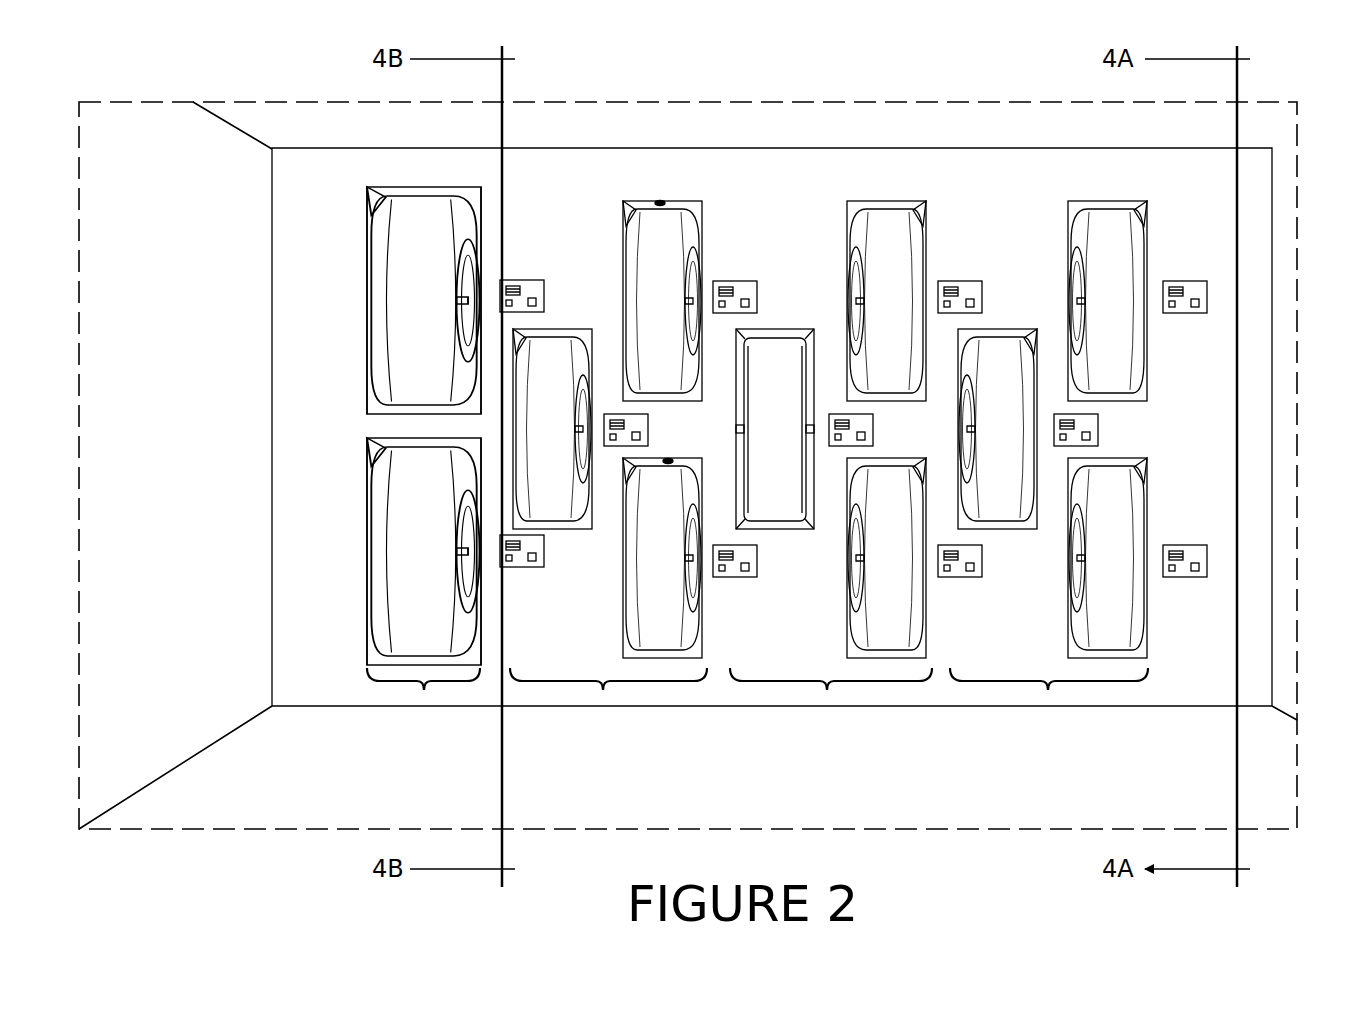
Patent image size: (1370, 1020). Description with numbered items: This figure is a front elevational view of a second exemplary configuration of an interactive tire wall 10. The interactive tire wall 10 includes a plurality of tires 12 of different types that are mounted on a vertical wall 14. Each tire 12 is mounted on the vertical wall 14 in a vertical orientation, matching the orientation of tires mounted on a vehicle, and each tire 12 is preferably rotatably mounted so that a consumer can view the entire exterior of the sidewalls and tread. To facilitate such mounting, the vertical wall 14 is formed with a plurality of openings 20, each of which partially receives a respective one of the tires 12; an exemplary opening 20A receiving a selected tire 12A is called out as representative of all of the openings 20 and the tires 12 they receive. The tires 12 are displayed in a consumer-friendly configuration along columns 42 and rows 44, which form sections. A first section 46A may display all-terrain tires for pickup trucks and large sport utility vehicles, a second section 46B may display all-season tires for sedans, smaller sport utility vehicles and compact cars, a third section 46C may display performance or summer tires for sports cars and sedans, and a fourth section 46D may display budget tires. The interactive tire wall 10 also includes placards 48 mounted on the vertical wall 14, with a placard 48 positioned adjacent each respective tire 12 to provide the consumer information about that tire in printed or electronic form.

The interactive tire wall 10 is at (877, 79).
The tire 12 is at (684, 205).
The selected tire 12A is at (652, 456).
The vertical wall 14 is at (1276, 181).
The opening 20 is at (660, 201).
The exemplary opening 20A is at (668, 461).
The column 42 is at (362, 195).
The row 44 is at (1162, 260).
The first section 46A is at (424, 697).
The second section 46B is at (604, 697).
The third section 46C is at (828, 697).
The fourth section 46D is at (1049, 697).
The placard 48 is at (728, 279).